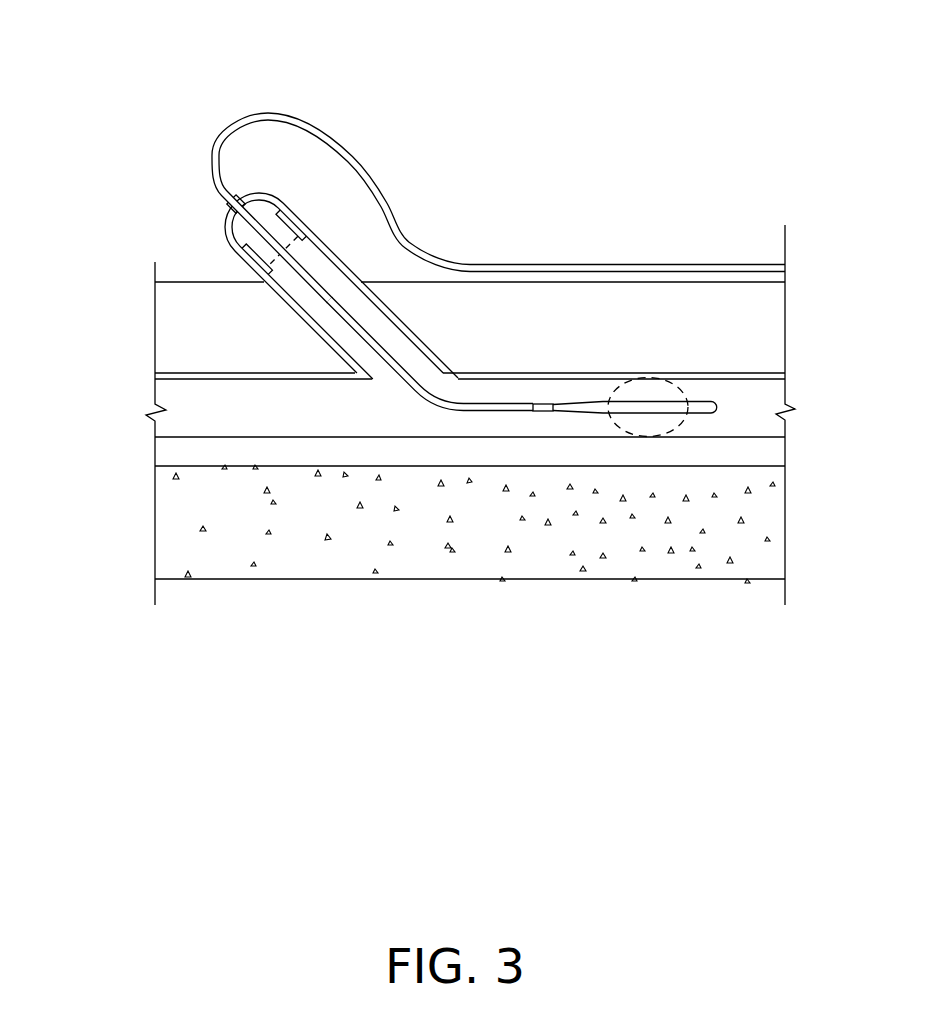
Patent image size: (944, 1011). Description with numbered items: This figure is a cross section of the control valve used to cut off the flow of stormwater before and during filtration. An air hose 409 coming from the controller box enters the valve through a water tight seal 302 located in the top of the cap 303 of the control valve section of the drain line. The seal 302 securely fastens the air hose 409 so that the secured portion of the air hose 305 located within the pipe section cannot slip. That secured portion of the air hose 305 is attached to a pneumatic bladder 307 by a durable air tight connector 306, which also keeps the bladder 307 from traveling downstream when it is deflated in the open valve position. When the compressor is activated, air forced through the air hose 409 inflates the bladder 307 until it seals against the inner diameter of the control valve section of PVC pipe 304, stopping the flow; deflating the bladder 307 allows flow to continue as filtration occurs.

The seal 302 is at (228, 203).
The cap 303 is at (299, 203).
The control valve section of PVC pipe 304 is at (346, 264).
The secured portion of the air hose 305 is at (430, 389).
The air tight connector 306 is at (544, 414).
The pneumatic bladder 307 is at (665, 382).
The air hose 409 is at (278, 113).